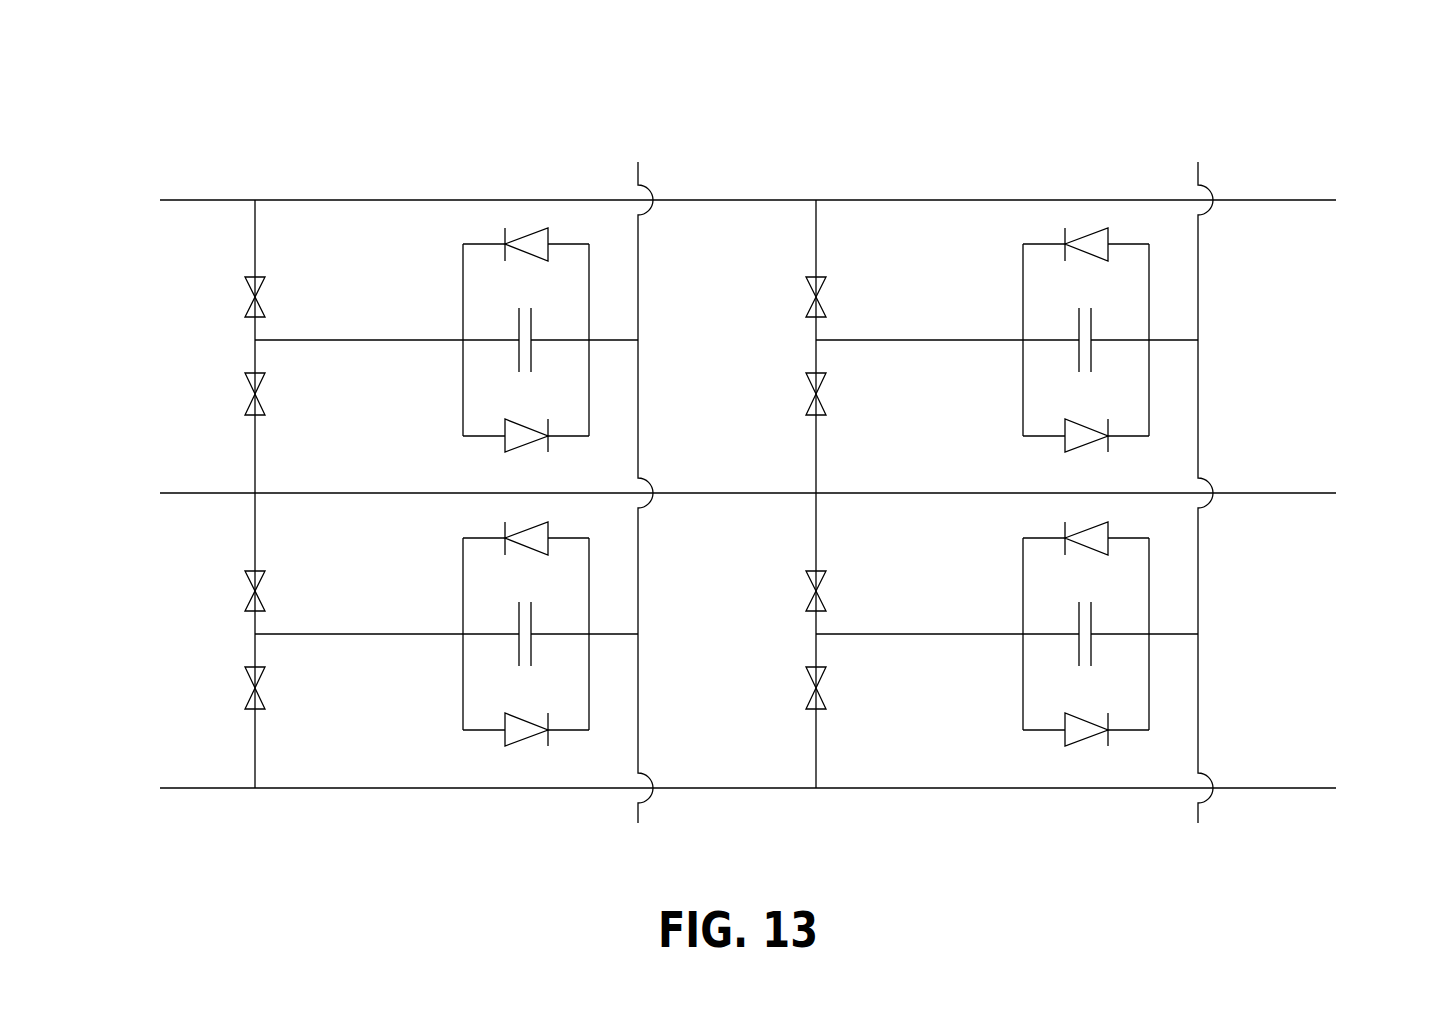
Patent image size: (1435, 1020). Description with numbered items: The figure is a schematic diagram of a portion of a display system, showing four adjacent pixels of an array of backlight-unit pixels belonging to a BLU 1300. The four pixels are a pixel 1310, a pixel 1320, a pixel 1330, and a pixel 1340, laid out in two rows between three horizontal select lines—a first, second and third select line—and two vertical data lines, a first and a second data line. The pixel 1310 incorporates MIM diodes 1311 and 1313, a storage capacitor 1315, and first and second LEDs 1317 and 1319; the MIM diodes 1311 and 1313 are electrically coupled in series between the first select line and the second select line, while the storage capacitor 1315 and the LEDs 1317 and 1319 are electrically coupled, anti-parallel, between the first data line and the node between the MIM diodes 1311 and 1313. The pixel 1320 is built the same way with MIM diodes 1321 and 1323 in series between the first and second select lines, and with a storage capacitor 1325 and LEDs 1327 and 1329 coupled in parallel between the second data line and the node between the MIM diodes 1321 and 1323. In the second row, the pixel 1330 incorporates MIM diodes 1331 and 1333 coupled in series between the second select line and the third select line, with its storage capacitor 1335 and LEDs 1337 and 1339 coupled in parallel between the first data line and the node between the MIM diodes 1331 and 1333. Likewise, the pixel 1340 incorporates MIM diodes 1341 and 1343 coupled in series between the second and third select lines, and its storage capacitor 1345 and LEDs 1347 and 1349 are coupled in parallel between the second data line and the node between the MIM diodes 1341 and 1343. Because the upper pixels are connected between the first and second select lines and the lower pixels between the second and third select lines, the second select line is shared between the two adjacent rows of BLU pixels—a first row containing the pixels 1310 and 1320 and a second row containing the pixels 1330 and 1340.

The BLU 1300 is at (1318, 150).
The pixel 1310 is at (408, 182).
The MIM diode 1311 is at (243, 296).
The MIM diode 1313 is at (243, 394).
The storage capacitor 1315 is at (495, 372).
The first LED 1317 is at (488, 443).
The second LED 1319 is at (482, 231).
The pixel 1320 is at (1028, 165).
The MIM diode 1321 is at (803, 296).
The MIM diode 1323 is at (803, 394).
The storage capacitor 1325 is at (1055, 360).
The LED 1327 is at (1048, 443).
The LED 1329 is at (1042, 231).
The pixel 1330 is at (373, 832).
The MIM diode 1331 is at (243, 590).
The MIM diode 1333 is at (243, 688).
The storage capacitor 1335 is at (495, 666).
The LED 1337 is at (488, 737).
The LED 1339 is at (482, 525).
The pixel 1340 is at (997, 815).
The MIM diode 1341 is at (803, 590).
The MIM diode 1343 is at (803, 688).
The storage capacitor 1345 is at (1055, 647).
The LED 1347 is at (1048, 737).
The LED 1349 is at (1042, 522).